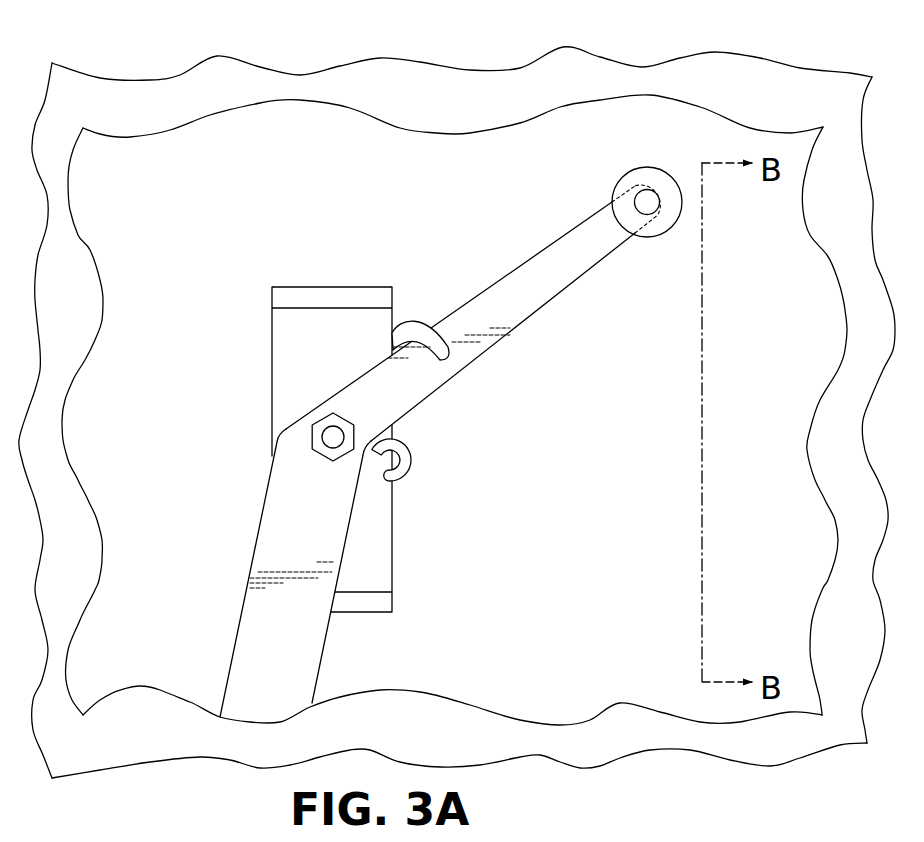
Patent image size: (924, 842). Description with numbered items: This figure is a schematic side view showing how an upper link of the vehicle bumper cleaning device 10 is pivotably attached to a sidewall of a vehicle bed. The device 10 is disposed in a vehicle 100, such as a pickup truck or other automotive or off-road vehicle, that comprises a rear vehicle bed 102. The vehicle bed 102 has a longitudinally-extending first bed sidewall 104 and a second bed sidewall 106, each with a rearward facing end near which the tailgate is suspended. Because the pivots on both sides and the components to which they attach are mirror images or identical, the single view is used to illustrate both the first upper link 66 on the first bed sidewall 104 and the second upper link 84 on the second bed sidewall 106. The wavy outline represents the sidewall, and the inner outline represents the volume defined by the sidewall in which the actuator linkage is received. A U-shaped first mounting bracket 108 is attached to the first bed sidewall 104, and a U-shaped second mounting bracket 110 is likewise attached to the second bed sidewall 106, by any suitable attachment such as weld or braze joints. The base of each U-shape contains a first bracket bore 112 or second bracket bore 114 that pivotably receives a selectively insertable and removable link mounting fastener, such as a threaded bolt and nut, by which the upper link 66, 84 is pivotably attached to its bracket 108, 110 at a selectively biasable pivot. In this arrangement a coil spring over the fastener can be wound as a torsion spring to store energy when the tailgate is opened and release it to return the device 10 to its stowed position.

The vehicle 100 is at (642, 64).
The vehicle bed 102 is at (437, 129).
The vehicle bumper cleaning device 10 is at (444, 270).
The first upper link 66 is at (484, 304).
The second upper link 84 is at (514, 266).
The first bed sidewall 104 is at (457, 449).
The second bed sidewall 106 is at (642, 378).
The first mounting bracket 108 is at (381, 573).
The second mounting bracket 110 is at (395, 556).
The first bracket bore 112 is at (461, 448).
The second bracket bore 114 is at (420, 447).